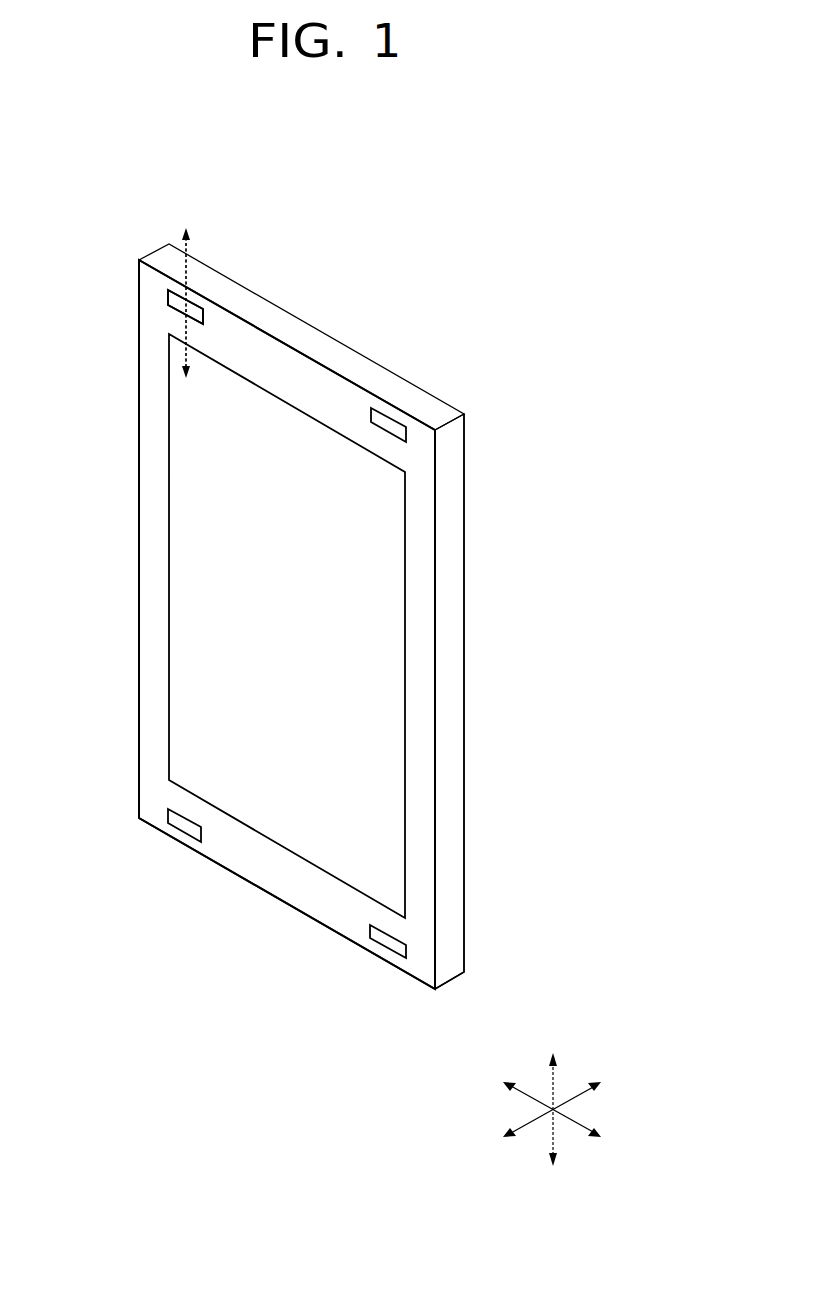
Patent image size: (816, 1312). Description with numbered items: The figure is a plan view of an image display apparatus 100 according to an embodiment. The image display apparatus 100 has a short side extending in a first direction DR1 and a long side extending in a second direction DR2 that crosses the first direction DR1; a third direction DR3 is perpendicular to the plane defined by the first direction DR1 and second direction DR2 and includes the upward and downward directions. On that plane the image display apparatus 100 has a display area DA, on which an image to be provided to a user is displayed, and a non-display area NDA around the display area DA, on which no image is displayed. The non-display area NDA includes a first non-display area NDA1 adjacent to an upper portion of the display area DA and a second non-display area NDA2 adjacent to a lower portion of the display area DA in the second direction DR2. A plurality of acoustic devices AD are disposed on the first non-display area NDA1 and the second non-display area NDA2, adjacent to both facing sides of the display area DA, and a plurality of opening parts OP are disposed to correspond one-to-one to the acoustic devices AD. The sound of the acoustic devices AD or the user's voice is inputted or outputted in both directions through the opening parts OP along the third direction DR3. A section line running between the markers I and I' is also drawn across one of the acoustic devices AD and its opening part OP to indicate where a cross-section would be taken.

The image display apparatus 100 is at (463, 277).
The display area DA is at (387, 692).
The non-display area NDA is at (422, 648).
The first non-display area NDA1 is at (331, 393).
The second non-display area NDA2 is at (287, 880).
The acoustic device AD is at (168, 298).
The opening part OP is at (190, 304).
The section line I is at (186, 315).
The section line I' is at (187, 290).
The first direction DR1 is at (530, 1101).
The second direction DR2 is at (552, 1096).
The third direction DR3 is at (530, 1121).